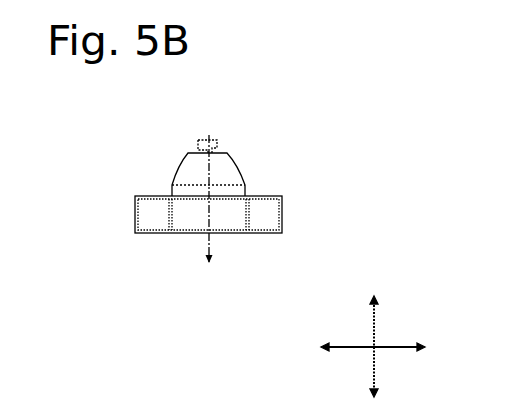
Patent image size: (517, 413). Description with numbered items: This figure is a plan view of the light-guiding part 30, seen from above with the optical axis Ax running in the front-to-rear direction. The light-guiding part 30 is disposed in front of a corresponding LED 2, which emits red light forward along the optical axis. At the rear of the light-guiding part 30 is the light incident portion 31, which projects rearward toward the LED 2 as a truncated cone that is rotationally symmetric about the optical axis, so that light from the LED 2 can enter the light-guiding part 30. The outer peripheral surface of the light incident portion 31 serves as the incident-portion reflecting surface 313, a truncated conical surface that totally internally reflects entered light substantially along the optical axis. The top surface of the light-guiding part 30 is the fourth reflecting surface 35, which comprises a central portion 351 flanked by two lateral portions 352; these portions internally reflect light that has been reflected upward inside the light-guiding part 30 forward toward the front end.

The LED 2 is at (207, 137).
The light-guiding part 30 is at (308, 145).
The light incident portion 31 is at (168, 163).
The incident-portion reflecting surface 313 is at (226, 168).
The fourth reflecting surface 35 is at (207, 279).
The central portion 351 is at (183, 233).
The lateral portions 352 is at (155, 233).